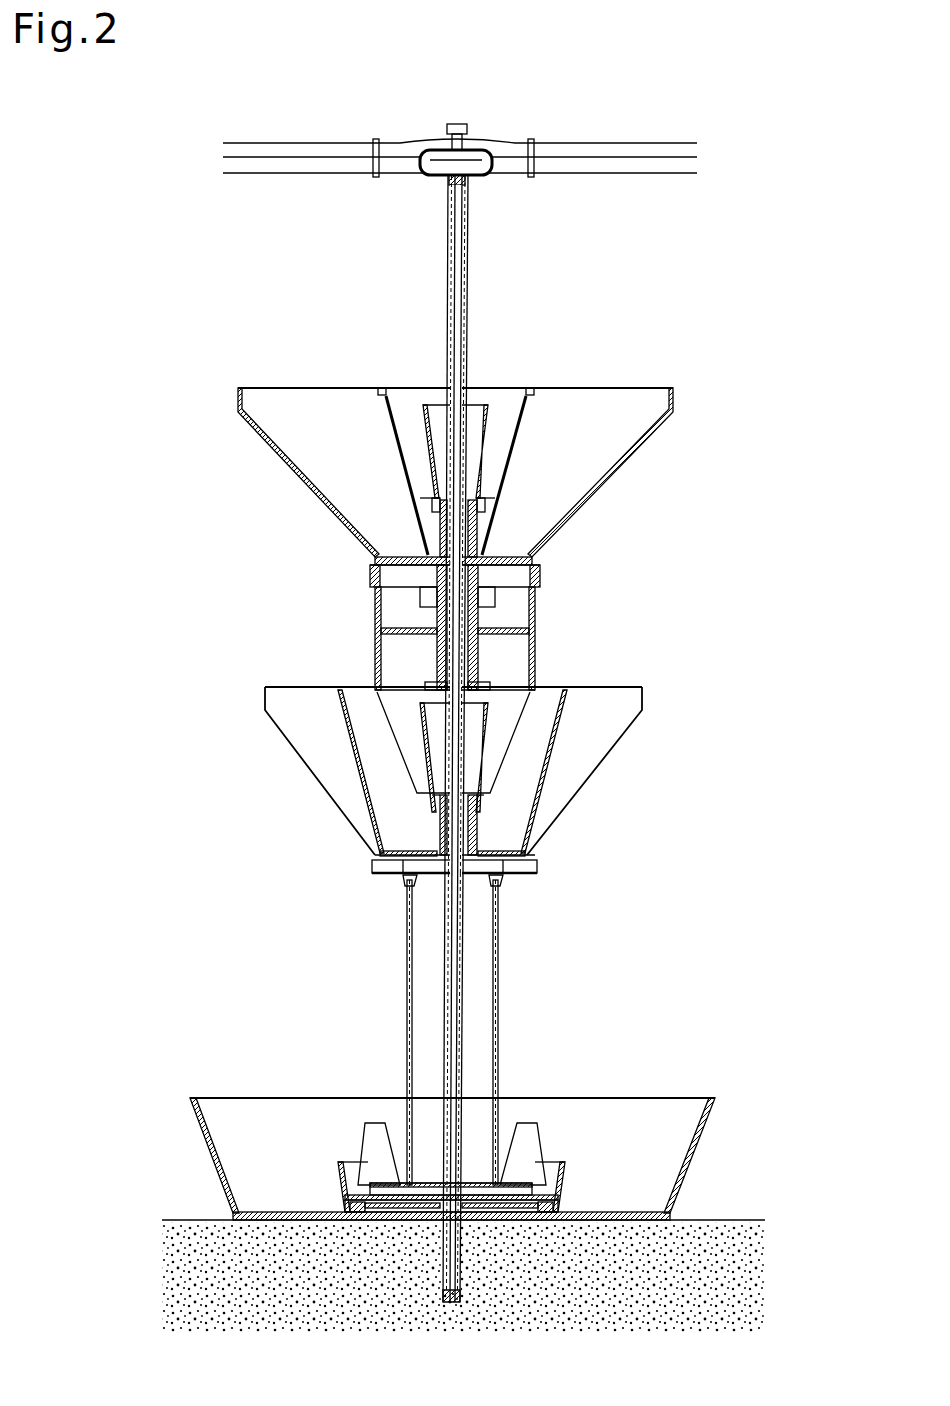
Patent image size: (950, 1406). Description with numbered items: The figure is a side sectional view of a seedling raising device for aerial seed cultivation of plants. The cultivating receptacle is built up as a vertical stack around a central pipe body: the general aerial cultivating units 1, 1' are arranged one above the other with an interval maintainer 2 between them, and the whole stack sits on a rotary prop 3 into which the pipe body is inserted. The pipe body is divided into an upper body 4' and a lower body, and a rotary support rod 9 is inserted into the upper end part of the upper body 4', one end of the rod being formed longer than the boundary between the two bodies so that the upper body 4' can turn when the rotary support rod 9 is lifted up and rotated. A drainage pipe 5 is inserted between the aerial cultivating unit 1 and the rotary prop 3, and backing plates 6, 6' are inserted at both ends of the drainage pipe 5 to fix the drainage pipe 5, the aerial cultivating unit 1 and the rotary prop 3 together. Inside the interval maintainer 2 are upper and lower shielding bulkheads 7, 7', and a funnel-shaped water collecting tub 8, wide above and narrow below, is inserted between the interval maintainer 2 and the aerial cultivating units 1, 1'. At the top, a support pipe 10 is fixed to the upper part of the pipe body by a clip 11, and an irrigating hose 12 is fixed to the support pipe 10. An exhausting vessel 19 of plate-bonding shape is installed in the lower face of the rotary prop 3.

The aerial cultivating unit 1 is at (507, 771).
The aerial cultivating unit 1' is at (518, 476).
The interval maintainer 2 is at (377, 668).
The rotary prop 3 is at (535, 1137).
The upper body of pipe body 4' is at (391, 525).
The drainage pipe 5 is at (405, 995).
The backing plate 6 is at (451, 1123).
The backing plate 6' is at (406, 871).
The shielding bulkhead 7 is at (366, 608).
The shielding bulkhead 7' is at (555, 603).
The water collecting tub 8 is at (485, 405).
The rotary support rod 9 is at (456, 123).
The support pipe 10 is at (660, 173).
The clip 11 is at (486, 178).
The irrigating hose 12 is at (620, 150).
The exhausting vessel 19 is at (212, 1162).